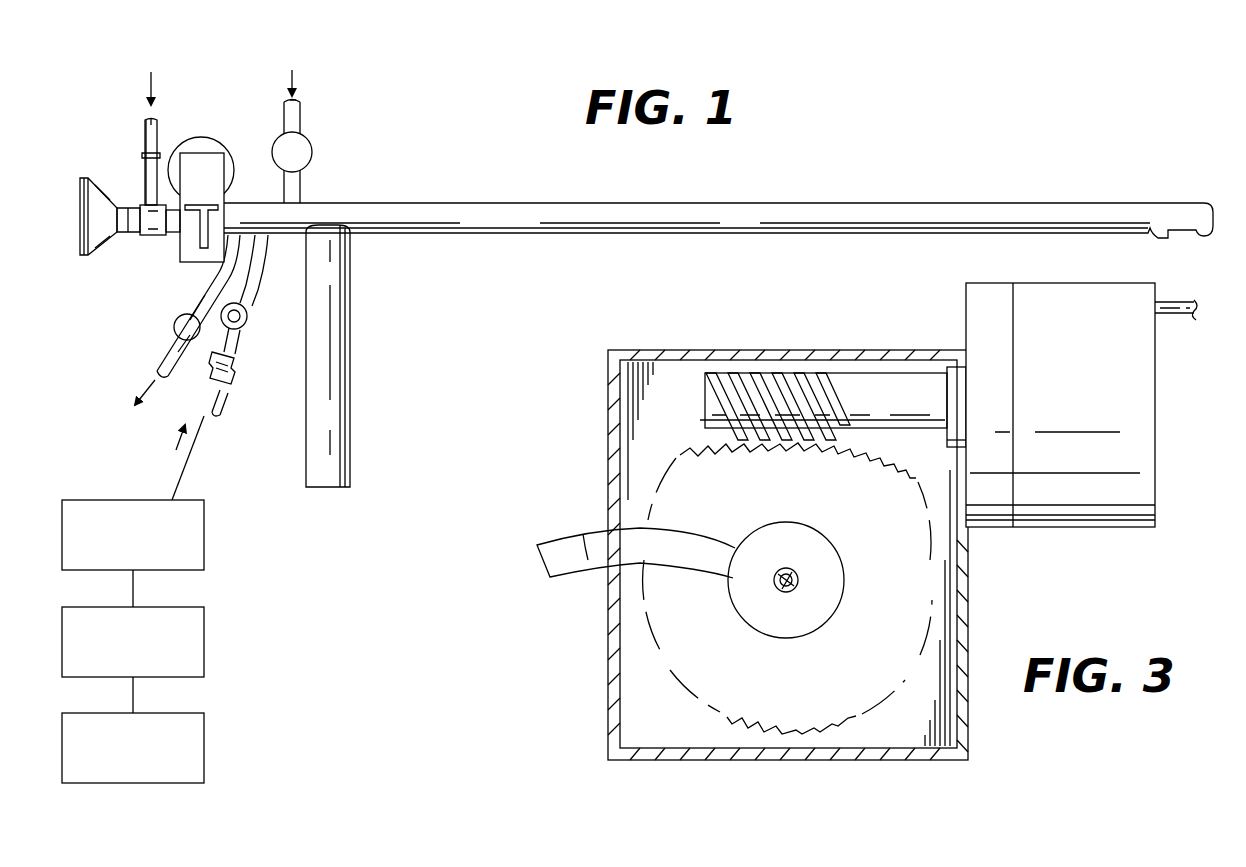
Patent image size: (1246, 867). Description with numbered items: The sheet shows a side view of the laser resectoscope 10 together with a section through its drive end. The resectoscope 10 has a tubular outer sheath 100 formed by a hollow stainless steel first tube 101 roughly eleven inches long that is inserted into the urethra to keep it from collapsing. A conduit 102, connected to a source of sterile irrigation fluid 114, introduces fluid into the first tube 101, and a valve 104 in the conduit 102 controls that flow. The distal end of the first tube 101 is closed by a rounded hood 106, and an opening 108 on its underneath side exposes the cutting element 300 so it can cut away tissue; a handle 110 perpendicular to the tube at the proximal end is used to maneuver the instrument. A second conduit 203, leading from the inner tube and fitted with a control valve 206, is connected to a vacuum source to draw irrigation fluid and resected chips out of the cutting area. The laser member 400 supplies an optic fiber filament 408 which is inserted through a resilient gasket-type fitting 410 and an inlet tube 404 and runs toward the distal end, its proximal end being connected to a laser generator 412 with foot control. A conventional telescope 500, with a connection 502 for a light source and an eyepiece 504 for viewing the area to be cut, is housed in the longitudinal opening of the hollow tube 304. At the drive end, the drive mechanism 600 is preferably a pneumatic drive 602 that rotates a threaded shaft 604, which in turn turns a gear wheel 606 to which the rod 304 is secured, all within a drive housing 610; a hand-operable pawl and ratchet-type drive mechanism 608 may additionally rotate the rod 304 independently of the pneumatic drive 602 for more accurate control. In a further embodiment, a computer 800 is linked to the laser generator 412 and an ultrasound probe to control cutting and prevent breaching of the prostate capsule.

In FIG. 1, the resectoscope 10 is at (875, 193).
In FIG. 1, the tubular outer sheath 100 is at (620, 194).
In FIG. 1, the first tube 101 is at (695, 205).
In FIG. 1, the conduit 102 is at (303, 110).
In FIG. 1, the valve 104 is at (313, 152).
In FIG. 1, the rounded hood 106 is at (1208, 200).
In FIG. 1, the opening 108 is at (1158, 238).
In FIG. 1, the handle 110 is at (345, 358).
In FIG. 1, the irrigation fluid 114 is at (300, 84).
In FIG. 1, the second conduit 203 is at (198, 304).
In FIG. 1, the control valve 206 is at (172, 327).
In FIG. 1, the cutting element 300 is at (1182, 240).
In FIG. 3, the hollow tube (rod) 304 is at (778, 594).
In FIG. 1, the laser member 400 is at (264, 280).
In FIG. 1, the inlet tube 404 is at (270, 246).
In FIG. 1, the optic fiber filament 408 is at (194, 440).
In FIG. 1, the resilient gasket-type fitting 410 is at (233, 375).
In FIG. 1, the laser generator 412 is at (205, 512).
In FIG. 1, the telescope 500 is at (128, 238).
In FIG. 1, the connection for a light source 502 is at (142, 150).
In FIG. 1, the eyepiece 504 is at (78, 185).
In FIG. 1, the drive mechanism 600 is at (230, 142).
In FIG. 3, the drive mechanism 600 is at (824, 340).
In FIG. 1, the pneumatic drive 602 is at (200, 140).
In FIG. 3, the pneumatic drive 602 is at (1080, 530).
In FIG. 3, the threaded shaft 604 is at (748, 378).
In FIG. 3, the gear wheel 606 is at (855, 697).
In FIG. 3, the pawl and ratchet-type drive mechanism 608 is at (598, 550).
In FIG. 3, the drive housing 610 is at (606, 445).
In FIG. 1, the computer 800 is at (206, 620).